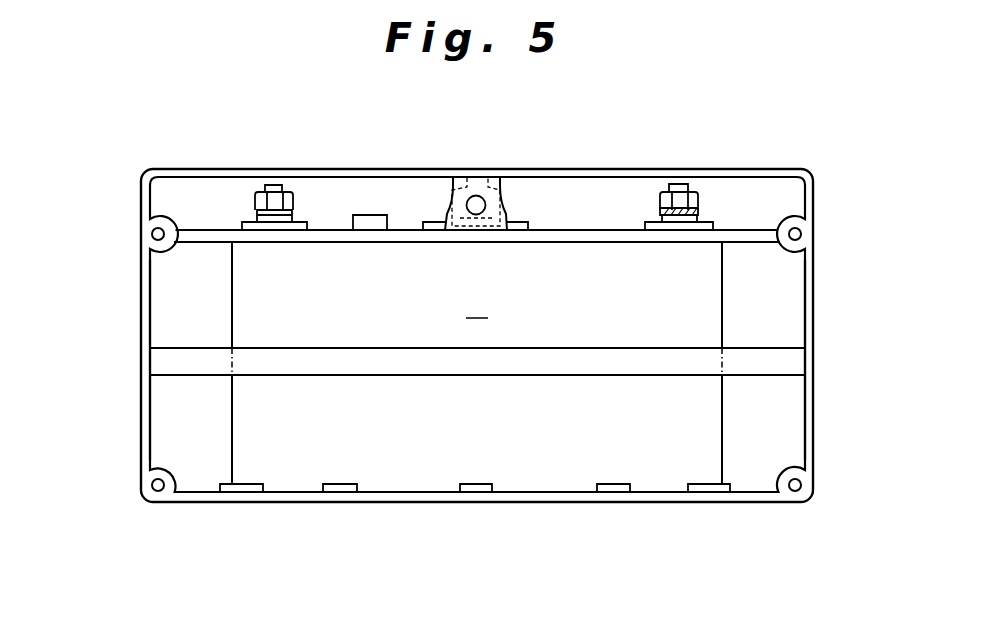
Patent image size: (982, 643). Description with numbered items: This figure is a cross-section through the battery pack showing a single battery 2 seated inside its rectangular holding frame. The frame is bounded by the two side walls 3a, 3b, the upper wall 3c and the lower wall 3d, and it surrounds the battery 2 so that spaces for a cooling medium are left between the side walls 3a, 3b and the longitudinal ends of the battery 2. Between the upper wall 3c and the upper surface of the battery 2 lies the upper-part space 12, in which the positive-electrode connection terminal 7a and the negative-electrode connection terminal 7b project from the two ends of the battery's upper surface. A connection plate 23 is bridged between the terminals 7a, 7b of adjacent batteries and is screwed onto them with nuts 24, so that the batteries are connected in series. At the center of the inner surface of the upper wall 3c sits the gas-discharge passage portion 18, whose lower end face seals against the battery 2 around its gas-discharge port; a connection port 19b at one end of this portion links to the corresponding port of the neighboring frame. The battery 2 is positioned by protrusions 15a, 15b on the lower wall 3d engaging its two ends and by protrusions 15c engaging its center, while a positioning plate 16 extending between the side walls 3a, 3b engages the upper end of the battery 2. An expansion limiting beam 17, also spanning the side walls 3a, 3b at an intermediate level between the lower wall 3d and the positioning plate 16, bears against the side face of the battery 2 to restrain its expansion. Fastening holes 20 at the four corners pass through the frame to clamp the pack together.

The battery 2 is at (477, 363).
The side wall 3a is at (144, 426).
The side wall 3b is at (810, 403).
The upper wall 3c is at (335, 168).
The lower wall 3d is at (550, 500).
The positive-electrode connection terminal 7a is at (271, 188).
The negative-electrode connection terminal 7b is at (680, 183).
The upper-part space 12 is at (768, 200).
The positioning protrusion 15a is at (228, 492).
The positioning protrusion 15b is at (703, 493).
The positioning protrusion 15c is at (343, 491).
The positioning plate 16 is at (593, 233).
The expansion limiting beam 17 is at (197, 357).
The gas-discharge passage portion 18 is at (445, 198).
The connection port 19b is at (478, 204).
The fastening hole 20 is at (151, 234).
The connection plate 23 is at (253, 210).
The nut 24 is at (258, 198).